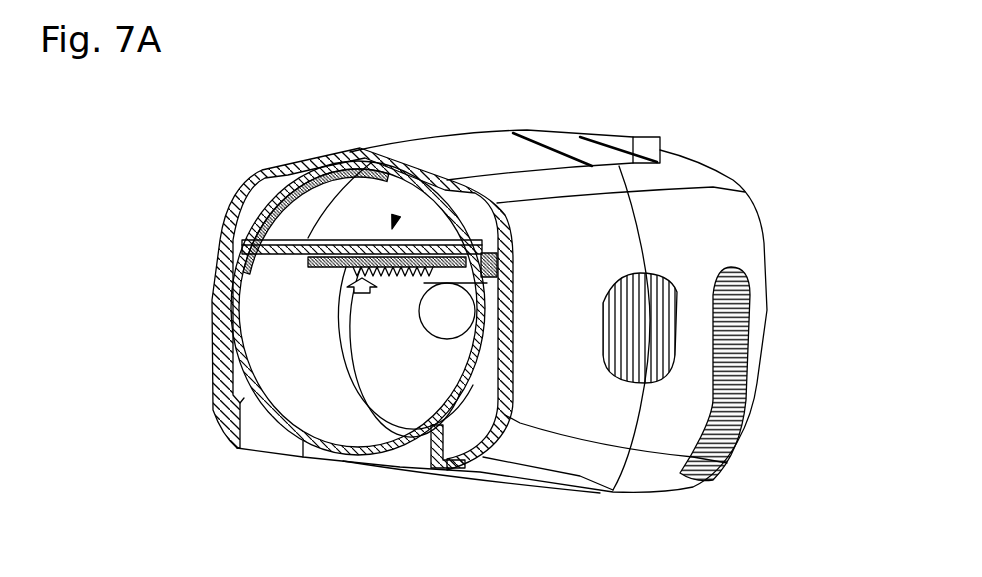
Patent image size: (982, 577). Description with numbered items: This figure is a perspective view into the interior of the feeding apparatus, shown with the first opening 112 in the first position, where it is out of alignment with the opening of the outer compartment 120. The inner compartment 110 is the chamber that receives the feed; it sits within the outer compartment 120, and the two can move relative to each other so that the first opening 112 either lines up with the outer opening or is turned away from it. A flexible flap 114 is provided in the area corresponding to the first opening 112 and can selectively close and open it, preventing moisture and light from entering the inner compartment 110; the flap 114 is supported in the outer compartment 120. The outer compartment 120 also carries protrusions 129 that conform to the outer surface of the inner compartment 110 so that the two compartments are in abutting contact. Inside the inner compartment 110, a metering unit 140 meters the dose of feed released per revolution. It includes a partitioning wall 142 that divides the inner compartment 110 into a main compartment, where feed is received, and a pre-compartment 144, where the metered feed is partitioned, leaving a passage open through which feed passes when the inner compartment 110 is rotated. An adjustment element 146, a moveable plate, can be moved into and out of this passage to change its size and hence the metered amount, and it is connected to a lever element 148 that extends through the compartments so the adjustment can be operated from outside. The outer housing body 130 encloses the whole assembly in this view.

The inner compartment 110 is at (233, 323).
The first opening 112 is at (313, 200).
The flap 114 is at (273, 171).
The outer compartment 120 is at (228, 395).
The protrusions 129 is at (431, 450).
The housing body 130 is at (713, 227).
The metering unit 140 is at (396, 222).
The partitioning wall 142 is at (257, 231).
The pre-compartment 144 is at (370, 223).
The adjustment element 146 is at (427, 235).
The lever element 148 is at (403, 343).